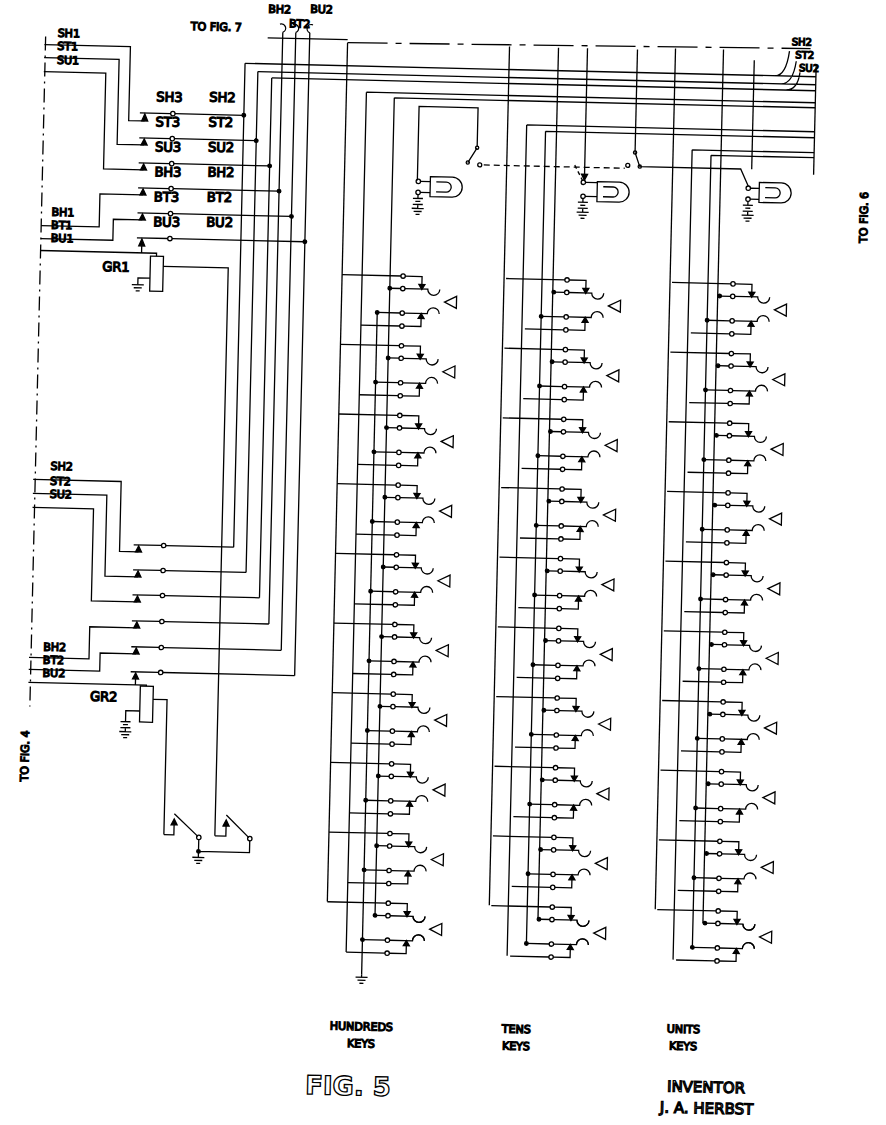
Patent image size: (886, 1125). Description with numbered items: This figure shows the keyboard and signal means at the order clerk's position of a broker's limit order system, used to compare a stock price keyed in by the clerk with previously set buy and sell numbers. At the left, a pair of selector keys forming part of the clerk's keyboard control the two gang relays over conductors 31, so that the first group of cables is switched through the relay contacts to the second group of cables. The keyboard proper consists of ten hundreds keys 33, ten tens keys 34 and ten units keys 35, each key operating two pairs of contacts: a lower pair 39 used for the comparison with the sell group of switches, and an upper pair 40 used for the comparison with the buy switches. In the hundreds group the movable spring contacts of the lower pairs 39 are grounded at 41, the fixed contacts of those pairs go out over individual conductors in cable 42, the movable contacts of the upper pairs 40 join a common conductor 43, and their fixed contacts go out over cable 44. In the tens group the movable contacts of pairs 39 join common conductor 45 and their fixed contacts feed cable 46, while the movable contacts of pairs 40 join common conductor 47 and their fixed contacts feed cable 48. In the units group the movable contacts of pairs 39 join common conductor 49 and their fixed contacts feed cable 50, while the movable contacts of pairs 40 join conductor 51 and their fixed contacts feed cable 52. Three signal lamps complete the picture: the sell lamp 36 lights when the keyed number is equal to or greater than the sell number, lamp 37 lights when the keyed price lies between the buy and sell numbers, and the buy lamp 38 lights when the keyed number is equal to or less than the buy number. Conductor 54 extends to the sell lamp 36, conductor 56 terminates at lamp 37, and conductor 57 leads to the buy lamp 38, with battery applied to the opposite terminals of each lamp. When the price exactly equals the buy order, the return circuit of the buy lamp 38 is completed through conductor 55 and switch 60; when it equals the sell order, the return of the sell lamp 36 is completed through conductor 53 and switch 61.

The conductors 31 is at (229, 762).
The hundreds keys 33 is at (397, 616).
The tens keys 34 is at (561, 608).
The units keys 35 is at (727, 609).
The signal lamp 36 is at (469, 186).
The signal lamp 37 is at (628, 187).
The signal lamp 38 is at (781, 180).
The lower pair of contacts 39 is at (446, 950).
The upper pair of contacts 40 is at (441, 916).
The ground 41 is at (380, 985).
The cable 42 is at (362, 220).
The common conductor 43 is at (390, 176).
The cable 44 is at (344, 47).
The common conductor 45 is at (542, 230).
The cable 46 is at (523, 240).
The common conductor 47 is at (553, 264).
The cable 48 is at (492, 226).
The common conductor 49 is at (708, 262).
The cable 50 is at (689, 215).
The conductor 51 is at (726, 232).
The cable 52 is at (670, 233).
The conductor 53 is at (704, 121).
The common conductor 54 is at (739, 107).
The common conductor 55 is at (634, 57).
The common conductor 56 is at (584, 57).
The conductor 57 is at (749, 50).
The switch 60 is at (628, 153).
The switch 61 is at (470, 142).